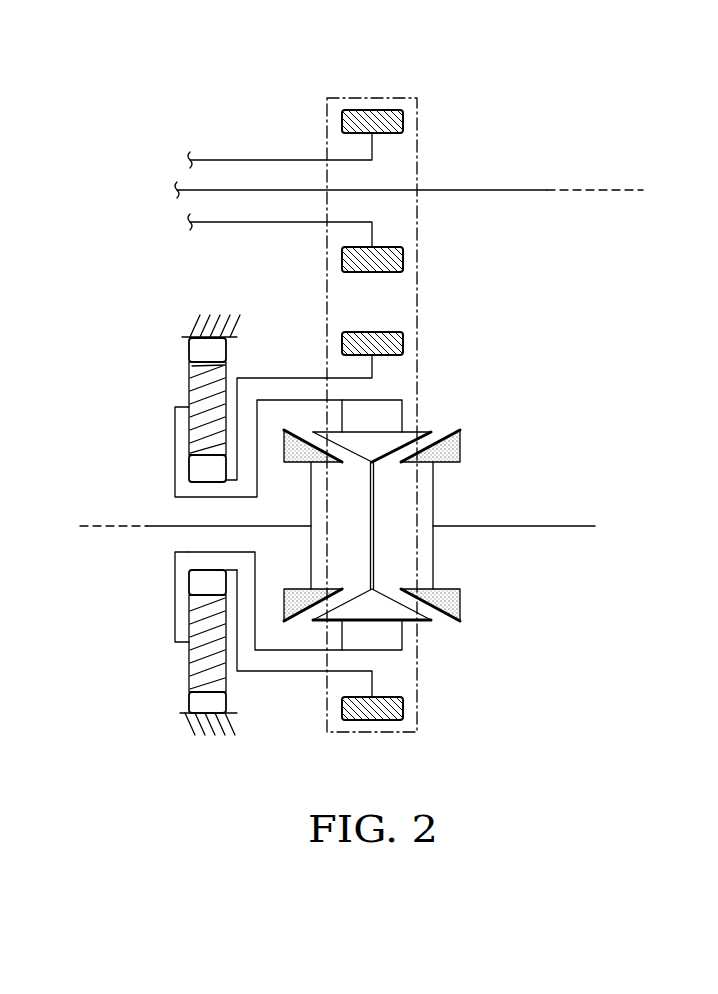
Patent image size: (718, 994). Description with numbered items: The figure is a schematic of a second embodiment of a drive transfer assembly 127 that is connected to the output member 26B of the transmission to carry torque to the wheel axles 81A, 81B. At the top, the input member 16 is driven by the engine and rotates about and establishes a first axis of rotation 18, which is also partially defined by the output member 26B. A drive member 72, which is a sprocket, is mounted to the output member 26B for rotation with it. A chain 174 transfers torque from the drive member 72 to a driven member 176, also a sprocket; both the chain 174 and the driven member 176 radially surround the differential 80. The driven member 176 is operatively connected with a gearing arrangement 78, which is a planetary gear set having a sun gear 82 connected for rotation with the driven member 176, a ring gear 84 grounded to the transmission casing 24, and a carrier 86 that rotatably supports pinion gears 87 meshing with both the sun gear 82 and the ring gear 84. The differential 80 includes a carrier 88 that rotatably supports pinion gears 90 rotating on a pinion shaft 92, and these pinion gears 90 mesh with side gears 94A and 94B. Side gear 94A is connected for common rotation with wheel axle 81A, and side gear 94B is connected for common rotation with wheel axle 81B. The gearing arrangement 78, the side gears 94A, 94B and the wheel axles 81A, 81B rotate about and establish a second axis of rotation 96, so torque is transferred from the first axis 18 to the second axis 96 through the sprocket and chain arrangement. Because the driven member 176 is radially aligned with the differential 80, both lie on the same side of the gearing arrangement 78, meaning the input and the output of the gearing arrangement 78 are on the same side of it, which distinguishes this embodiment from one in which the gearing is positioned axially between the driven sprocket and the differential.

The input member 16 is at (473, 190).
The axis of rotation 18 is at (585, 190).
The transmission casing 24 is at (190, 323).
The output member 26B is at (262, 160).
The drive member 72 is at (385, 110).
The gearing arrangement 78 is at (169, 661).
The differential 80 is at (459, 419).
The wheel axle 81A is at (162, 527).
The wheel axle 81B is at (510, 526).
The sun gear 82 is at (189, 580).
The ring gear 84 is at (226, 348).
The carrier 86 is at (182, 405).
The pinion gears 87 is at (190, 380).
The carrier 88 is at (403, 636).
The pinion gears 90 is at (418, 621).
The pinion shaft 92 is at (374, 548).
The side gear 94A is at (300, 589).
The side gear 94B is at (445, 589).
The second axis of rotation 96 is at (97, 525).
The drive transfer assembly 127 is at (509, 280).
The chain 174 is at (417, 272).
The driven member 176 is at (385, 332).